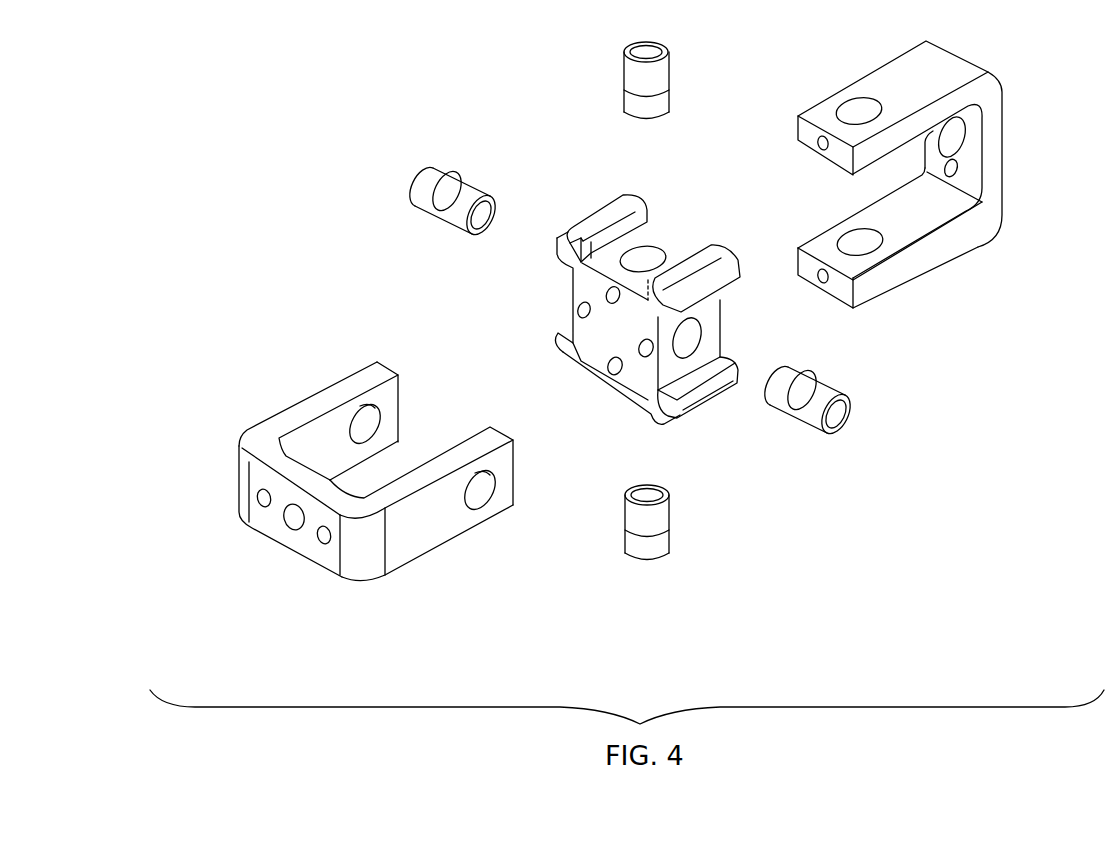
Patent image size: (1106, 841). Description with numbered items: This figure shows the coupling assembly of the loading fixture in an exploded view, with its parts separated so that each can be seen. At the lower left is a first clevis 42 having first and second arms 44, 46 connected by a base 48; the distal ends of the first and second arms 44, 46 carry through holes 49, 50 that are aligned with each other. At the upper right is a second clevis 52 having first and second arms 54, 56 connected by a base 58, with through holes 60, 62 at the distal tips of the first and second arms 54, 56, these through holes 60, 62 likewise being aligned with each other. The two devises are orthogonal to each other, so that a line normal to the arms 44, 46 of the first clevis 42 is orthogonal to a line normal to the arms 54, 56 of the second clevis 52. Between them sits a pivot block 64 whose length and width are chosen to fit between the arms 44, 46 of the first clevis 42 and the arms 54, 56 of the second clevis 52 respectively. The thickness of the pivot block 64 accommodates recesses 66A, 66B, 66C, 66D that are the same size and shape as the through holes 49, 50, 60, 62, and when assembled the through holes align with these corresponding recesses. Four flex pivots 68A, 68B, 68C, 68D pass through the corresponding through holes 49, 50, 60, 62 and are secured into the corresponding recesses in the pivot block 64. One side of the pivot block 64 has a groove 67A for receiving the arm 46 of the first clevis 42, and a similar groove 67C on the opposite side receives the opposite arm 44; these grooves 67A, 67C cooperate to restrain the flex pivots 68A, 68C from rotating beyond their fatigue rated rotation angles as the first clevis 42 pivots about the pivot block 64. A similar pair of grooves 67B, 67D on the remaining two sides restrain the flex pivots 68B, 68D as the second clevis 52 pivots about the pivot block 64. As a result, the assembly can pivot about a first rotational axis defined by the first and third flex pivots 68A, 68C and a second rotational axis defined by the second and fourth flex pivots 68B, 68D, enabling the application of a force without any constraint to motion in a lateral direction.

The first clevis 42 is at (212, 458).
The first arm of first clevis 44 is at (350, 390).
The second arm of first clevis 46 is at (428, 540).
The base of first clevis 48 is at (290, 546).
The through hole of first arm 49 is at (375, 424).
The through hole of second arm 50 is at (480, 498).
The second clevis 52 is at (1022, 196).
The first arm of second clevis 54 is at (950, 63).
The second arm of second clevis 56 is at (950, 253).
The base of second clevis 58 is at (1005, 120).
The through hole of first arm of second clevis 60 is at (860, 108).
The through hole of second arm of second clevis 62 is at (860, 240).
The pivot block 64 is at (612, 222).
The recess 66A is at (700, 331).
The recess 66B is at (655, 258).
The recess 66C is at (568, 272).
The recess 66D is at (628, 390).
The groove 67A is at (722, 360).
The groove 67B is at (652, 232).
The groove 67C is at (559, 250).
The groove 67D is at (610, 376).
The first flex pivot 68A is at (848, 396).
The second flex pivot 68B is at (625, 78).
The third flex pivot 68C is at (435, 190).
The fourth flex pivot 68D is at (668, 532).